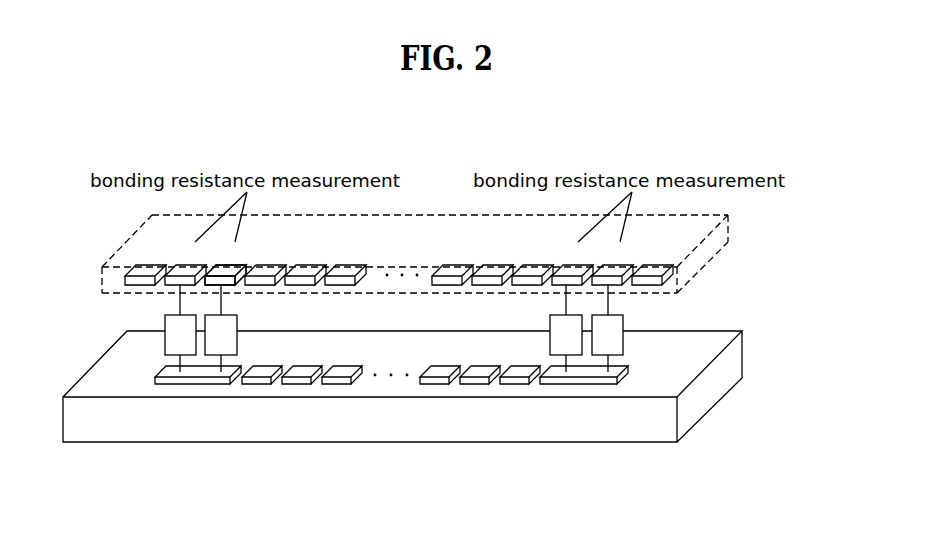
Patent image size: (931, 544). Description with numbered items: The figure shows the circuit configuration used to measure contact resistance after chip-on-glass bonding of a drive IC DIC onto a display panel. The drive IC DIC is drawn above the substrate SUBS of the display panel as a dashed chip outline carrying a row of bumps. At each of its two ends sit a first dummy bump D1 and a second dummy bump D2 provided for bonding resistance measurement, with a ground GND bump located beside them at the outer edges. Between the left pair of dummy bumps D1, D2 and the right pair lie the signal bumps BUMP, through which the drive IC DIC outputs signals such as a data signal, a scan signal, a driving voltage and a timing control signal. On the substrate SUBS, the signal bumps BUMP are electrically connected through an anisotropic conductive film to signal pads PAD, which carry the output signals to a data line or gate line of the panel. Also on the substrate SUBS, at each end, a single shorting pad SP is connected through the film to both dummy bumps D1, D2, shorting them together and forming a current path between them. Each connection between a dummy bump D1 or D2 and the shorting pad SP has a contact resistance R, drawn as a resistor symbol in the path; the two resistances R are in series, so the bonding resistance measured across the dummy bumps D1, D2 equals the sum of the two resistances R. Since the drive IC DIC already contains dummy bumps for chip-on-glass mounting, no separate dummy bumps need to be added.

The drive IC DIC is at (720, 232).
The signal bumps BUMP is at (552, 257).
The ground GND is at (400, 263).
The first dummy bump D1 is at (379, 278).
The second dummy bump D2 is at (419, 278).
The substrate SUBS is at (737, 357).
The resistance R is at (394, 335).
The shorting pad SP is at (572, 473).
The signal pads PAD is at (528, 397).